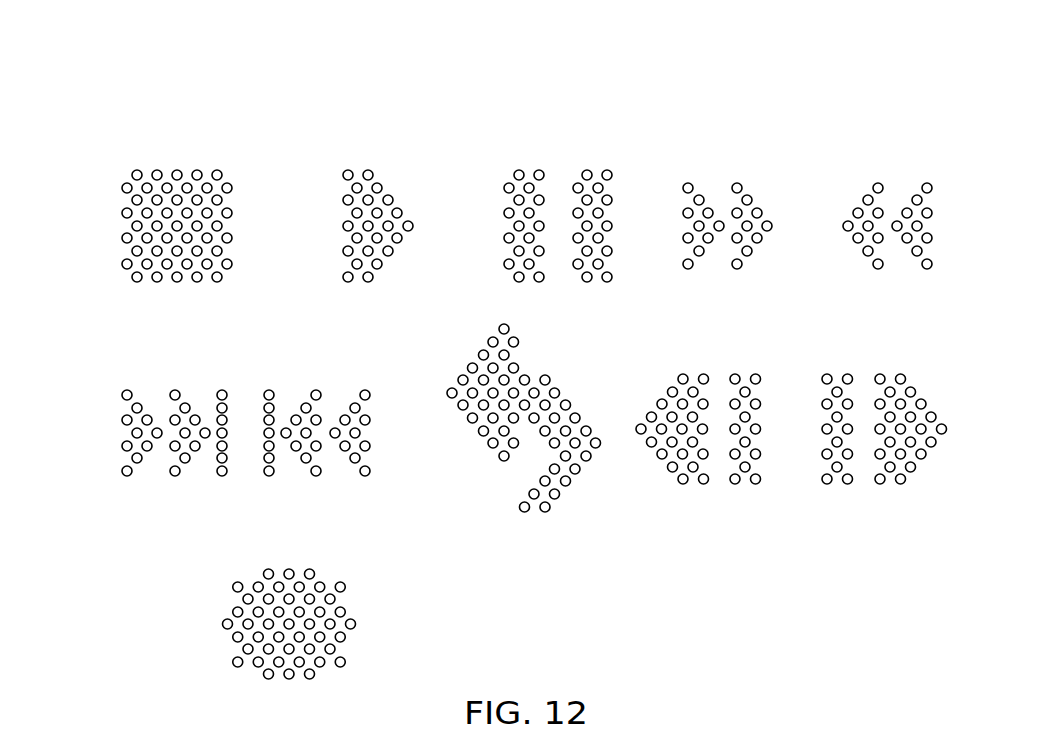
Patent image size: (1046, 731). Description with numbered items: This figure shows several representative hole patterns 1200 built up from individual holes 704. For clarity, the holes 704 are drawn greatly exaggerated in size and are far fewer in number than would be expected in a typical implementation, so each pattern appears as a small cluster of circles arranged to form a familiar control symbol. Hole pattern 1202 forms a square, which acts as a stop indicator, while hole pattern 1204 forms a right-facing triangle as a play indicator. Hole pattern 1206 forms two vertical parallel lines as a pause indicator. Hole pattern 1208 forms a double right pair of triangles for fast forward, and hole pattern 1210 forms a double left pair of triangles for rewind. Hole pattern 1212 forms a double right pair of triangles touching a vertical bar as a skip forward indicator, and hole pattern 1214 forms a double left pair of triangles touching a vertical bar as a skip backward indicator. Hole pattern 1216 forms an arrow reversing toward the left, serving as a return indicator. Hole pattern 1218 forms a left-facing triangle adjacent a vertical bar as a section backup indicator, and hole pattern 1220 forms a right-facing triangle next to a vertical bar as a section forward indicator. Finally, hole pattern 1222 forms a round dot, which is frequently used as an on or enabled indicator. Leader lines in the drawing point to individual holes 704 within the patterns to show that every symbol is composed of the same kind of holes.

The hole patterns 1200 is at (208, 77).
The hole pattern 1202 is at (167, 168).
The hole pattern 1204 is at (355, 168).
The hole pattern 1206 is at (578, 165).
The hole pattern 1208 is at (712, 168).
The hole pattern 1210 is at (875, 168).
The hole pattern 1212 is at (160, 385).
The hole pattern 1214 is at (310, 385).
The hole pattern 1216 is at (462, 348).
The hole pattern 1218 is at (730, 365).
The hole pattern 1220 is at (882, 365).
The hole pattern 1222 is at (248, 562).
The holes 704 is at (368, 282).